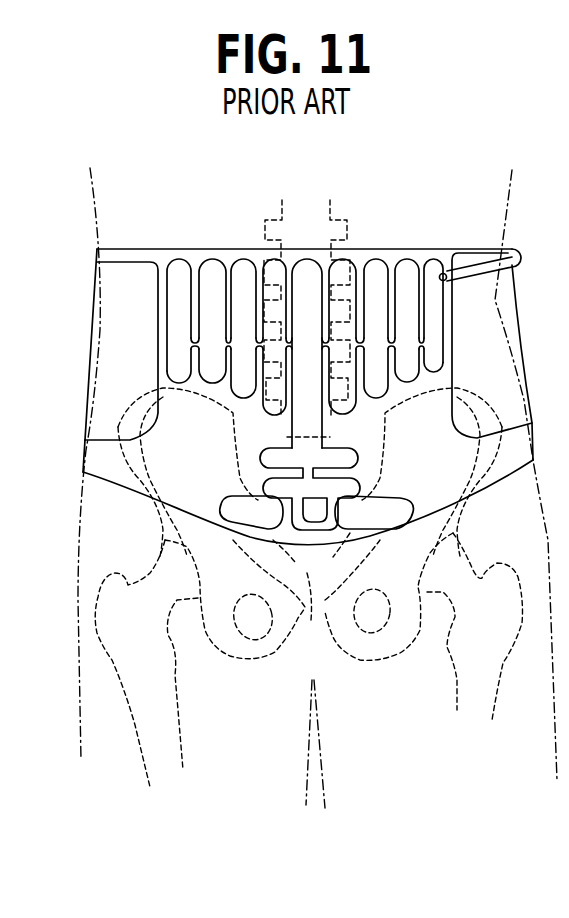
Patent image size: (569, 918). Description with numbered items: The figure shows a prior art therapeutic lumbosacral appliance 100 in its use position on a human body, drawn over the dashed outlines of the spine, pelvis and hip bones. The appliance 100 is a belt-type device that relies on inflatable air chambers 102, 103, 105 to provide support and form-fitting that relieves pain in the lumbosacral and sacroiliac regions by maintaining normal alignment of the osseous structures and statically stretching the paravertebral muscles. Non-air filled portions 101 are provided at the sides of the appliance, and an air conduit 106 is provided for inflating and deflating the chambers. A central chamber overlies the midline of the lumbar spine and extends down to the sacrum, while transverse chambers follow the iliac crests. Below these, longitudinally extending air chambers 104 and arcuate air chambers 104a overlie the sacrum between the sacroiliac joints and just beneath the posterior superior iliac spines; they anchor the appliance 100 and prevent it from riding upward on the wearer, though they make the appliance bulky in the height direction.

The prior art appliance 100 is at (71, 268).
The non-air filled portions 101 is at (118, 372).
The inflatable air chamber 102 is at (309, 270).
The inflatable air chamber 103 is at (372, 268).
The longitudinally extending air chambers 104 is at (347, 458).
The arcuate air chambers 104a is at (227, 505).
The inflatable air chamber 105 is at (196, 262).
The air conduit 106 is at (481, 268).